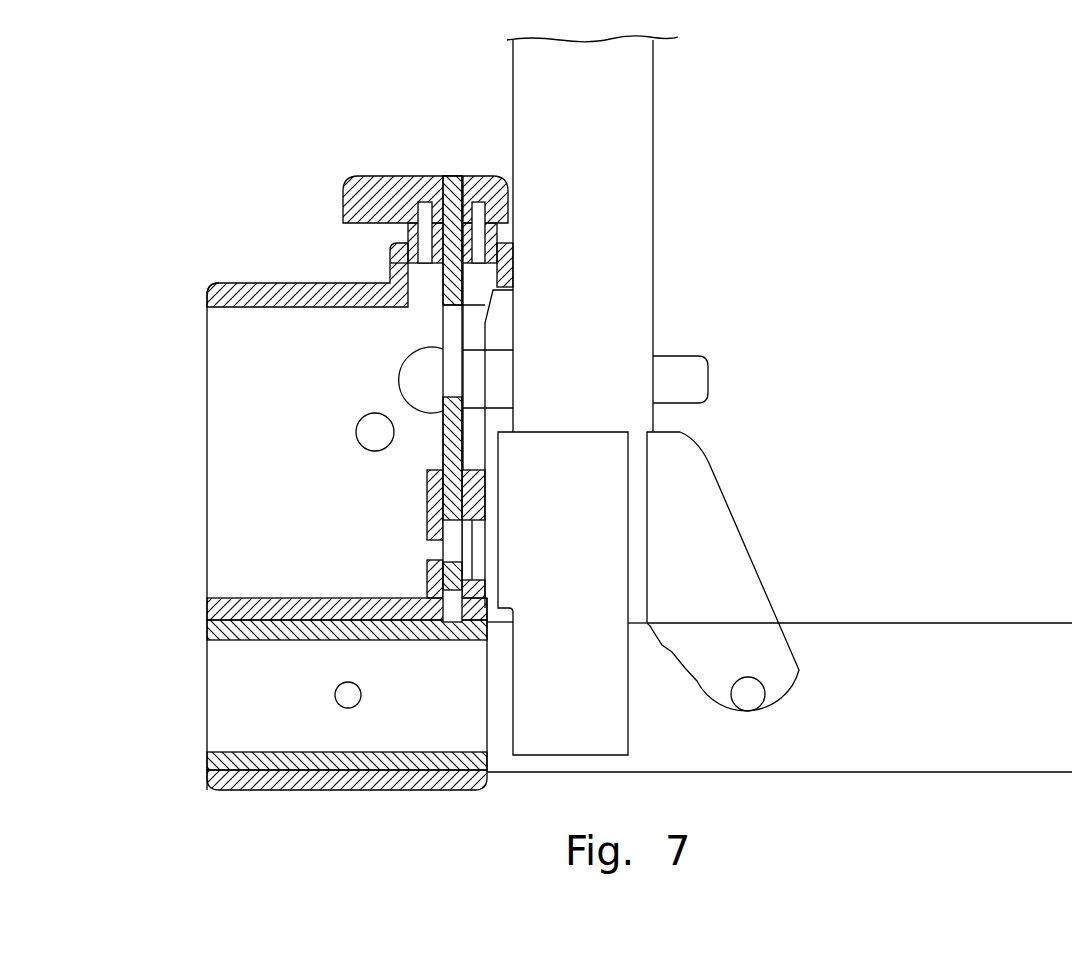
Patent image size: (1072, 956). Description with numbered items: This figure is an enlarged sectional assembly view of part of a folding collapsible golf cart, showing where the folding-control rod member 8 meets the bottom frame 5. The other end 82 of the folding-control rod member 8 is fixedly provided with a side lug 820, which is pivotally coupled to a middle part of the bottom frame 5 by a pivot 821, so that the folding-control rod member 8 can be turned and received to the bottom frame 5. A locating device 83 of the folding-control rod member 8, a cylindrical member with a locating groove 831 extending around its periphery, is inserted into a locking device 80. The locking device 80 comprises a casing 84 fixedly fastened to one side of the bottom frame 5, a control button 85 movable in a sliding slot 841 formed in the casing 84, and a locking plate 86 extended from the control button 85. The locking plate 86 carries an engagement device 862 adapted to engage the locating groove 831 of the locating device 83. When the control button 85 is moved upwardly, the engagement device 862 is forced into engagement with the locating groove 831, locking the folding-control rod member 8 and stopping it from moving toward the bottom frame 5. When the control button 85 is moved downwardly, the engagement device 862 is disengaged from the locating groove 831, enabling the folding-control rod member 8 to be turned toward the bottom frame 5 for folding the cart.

The locking device 80 is at (232, 268).
The casing 84 is at (316, 283).
The sliding slot 841 is at (388, 257).
The control button 85 is at (384, 175).
The engagement device 862 is at (453, 406).
The locating device 83 is at (408, 360).
The locating groove 831 is at (449, 396).
The locking plate 86 is at (462, 452).
The folding-control rod member 8 is at (682, 104).
The other end 82 is at (630, 203).
The side lug 820 is at (802, 672).
The pivot 821 is at (750, 693).
The bottom frame 5 is at (1002, 607).